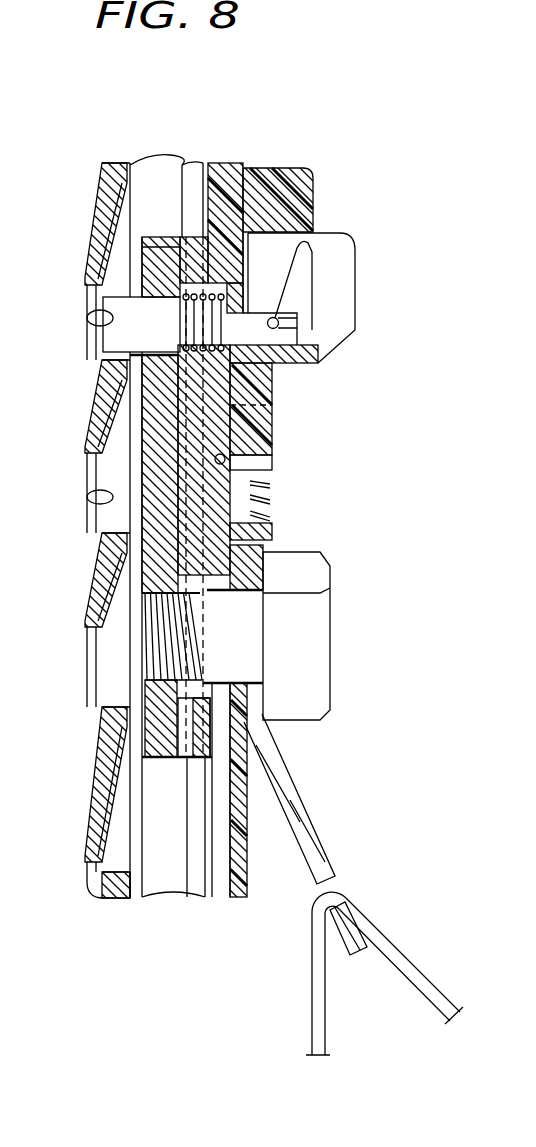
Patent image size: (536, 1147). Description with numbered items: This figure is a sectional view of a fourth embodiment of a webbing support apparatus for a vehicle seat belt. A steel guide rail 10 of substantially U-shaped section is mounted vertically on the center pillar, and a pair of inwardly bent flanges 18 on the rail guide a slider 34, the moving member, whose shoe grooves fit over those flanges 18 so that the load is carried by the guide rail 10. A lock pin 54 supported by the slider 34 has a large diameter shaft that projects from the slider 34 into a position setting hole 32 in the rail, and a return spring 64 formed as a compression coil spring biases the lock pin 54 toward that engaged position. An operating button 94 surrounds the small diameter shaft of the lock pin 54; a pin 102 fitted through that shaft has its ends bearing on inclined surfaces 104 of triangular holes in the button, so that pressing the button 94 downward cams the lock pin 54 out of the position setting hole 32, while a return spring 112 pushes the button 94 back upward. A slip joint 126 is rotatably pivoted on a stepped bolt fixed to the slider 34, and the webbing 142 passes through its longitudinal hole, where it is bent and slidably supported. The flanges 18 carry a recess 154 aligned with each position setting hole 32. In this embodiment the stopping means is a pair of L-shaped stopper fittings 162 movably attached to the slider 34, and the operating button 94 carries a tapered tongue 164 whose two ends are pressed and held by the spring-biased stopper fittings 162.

The guide rail 10 is at (95, 166).
The flanges 18 is at (197, 173).
The position setting hole 32 is at (100, 318).
The slider 34 is at (158, 235).
The lock pin 54 is at (252, 316).
The return spring 64 is at (232, 270).
The operating button 94 is at (334, 210).
The pin 102 is at (300, 323).
The inclined surfaces 104 is at (263, 280).
The return spring 112 is at (272, 486).
The slip joint 126 is at (302, 821).
The webbing 142 is at (387, 928).
The recess 154 is at (200, 853).
The stopper fittings 162 is at (275, 457).
The tapered tongue 164 is at (273, 420).